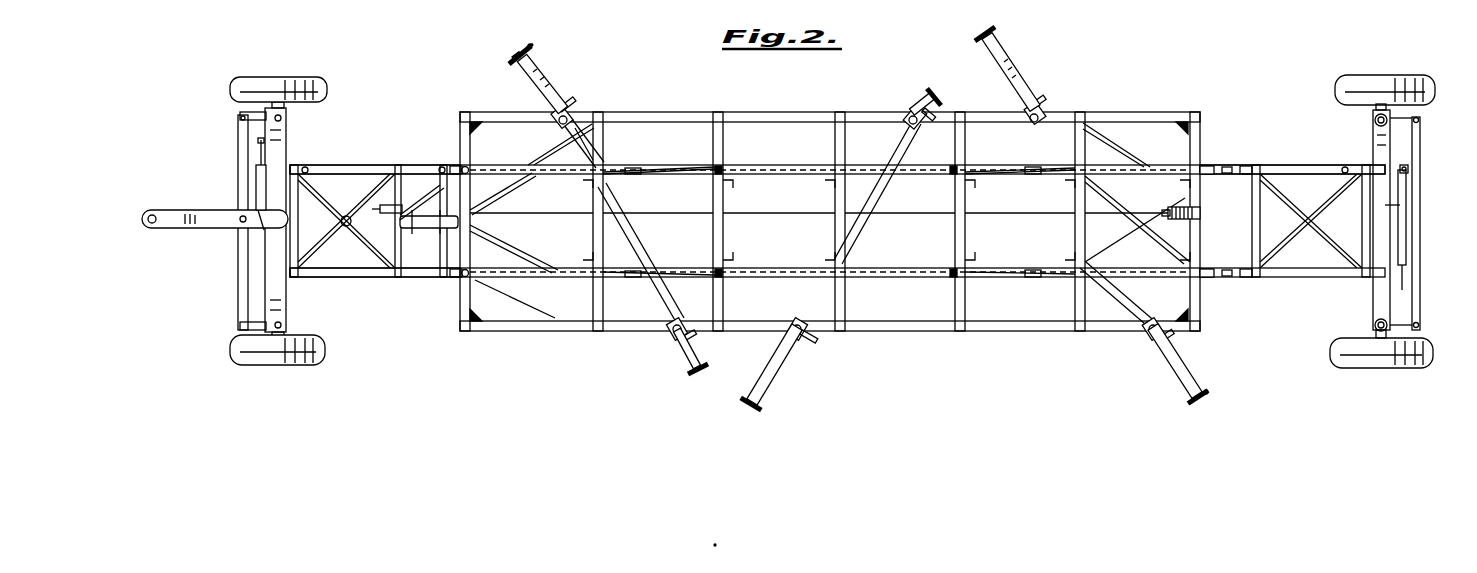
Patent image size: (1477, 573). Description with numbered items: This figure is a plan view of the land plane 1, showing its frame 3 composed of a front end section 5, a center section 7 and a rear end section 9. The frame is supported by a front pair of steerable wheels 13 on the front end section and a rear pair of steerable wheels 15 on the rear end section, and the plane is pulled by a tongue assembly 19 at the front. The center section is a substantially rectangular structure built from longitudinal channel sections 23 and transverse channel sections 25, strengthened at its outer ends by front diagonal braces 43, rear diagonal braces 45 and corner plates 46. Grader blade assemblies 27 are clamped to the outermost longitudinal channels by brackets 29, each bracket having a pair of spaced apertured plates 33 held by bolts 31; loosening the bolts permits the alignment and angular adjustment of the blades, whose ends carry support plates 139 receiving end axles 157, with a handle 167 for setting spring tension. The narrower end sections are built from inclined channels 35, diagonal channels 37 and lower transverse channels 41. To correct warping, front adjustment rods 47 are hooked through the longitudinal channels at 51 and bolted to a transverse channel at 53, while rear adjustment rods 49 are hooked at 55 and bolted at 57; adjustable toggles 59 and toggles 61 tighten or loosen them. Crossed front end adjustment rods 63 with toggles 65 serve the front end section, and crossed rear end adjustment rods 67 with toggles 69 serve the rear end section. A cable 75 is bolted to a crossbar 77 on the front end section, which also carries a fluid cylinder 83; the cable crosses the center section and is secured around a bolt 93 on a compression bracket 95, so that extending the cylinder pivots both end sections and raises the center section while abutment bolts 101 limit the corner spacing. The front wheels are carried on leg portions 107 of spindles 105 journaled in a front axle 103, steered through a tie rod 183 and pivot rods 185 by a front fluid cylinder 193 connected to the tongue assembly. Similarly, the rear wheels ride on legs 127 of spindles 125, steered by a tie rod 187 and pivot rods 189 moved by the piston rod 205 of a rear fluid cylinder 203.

The land plane 1 is at (790, 105).
The frame 3 is at (722, 110).
The front end section 5 is at (354, 277).
The center section 7 is at (930, 331).
The rear end section 9 is at (1268, 165).
The front steerable wheels 13 is at (248, 85).
The rear steerable wheels 15 is at (1360, 80).
The tongue assembly 19 is at (160, 210).
The longitudinal channel sections 23 is at (668, 112).
The transverse channel sections 25 is at (612, 190).
The grader blade assemblies 27 is at (548, 76).
The brackets 29 is at (576, 106).
The bolts 31 is at (556, 126).
The apertured plates 33 is at (558, 118).
The inclined channels 35 is at (352, 165).
The diagonal channels 37 is at (320, 200).
The lower transverse channels 41 is at (305, 146).
The front diagonal braces 43 is at (522, 182).
The rear diagonal braces 45 is at (1120, 128).
The corner plates 46 is at (1182, 124).
The front adjustment rods 47 is at (698, 168).
The rear adjustment rods 49 is at (973, 168).
The hooked ends of front adjustment rods 51 is at (470, 168).
The bolted ends of front adjustment rods 53 is at (722, 168).
The hooked ends of rear adjustment rods 55 is at (1205, 166).
The bolted ends of rear adjustment rods 57 is at (952, 168).
The adjustable toggles 59 is at (636, 168).
The adjustable toggles 61 is at (1030, 166).
The front end adjustment rods 63 is at (346, 228).
The toggles 65 is at (415, 200).
The rear end adjustment rods 67 is at (1228, 175).
The toggles 69 is at (1248, 166).
The cable 75 is at (548, 215).
The crossbar 77 is at (398, 170).
The fluid cylinder 83 is at (425, 278).
The bolt 93 is at (1170, 210).
The compression bracket 95 is at (1165, 214).
The abutment bolts 101 is at (453, 165).
The front axle 103 is at (288, 130).
The spindles 105 is at (274, 118).
The leg portions 107 is at (279, 102).
The spindles 125 is at (1374, 120).
The legs 127 is at (1374, 108).
The support plates 139 is at (512, 58).
The end axles 157 is at (516, 54).
The handle 167 is at (530, 46).
The tie rod 183 is at (242, 180).
The pivot rods 185 is at (246, 140).
The tie rod 187 is at (1420, 152).
The pivot rods 189 is at (1418, 122).
The front fluid cylinder 193 is at (256, 190).
The rear fluid cylinder 203 is at (1406, 225).
The piston rod 205 is at (1406, 182).